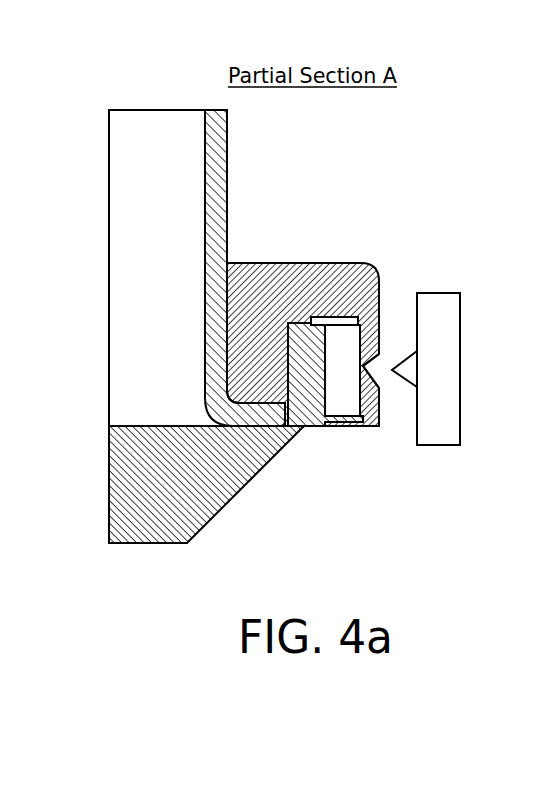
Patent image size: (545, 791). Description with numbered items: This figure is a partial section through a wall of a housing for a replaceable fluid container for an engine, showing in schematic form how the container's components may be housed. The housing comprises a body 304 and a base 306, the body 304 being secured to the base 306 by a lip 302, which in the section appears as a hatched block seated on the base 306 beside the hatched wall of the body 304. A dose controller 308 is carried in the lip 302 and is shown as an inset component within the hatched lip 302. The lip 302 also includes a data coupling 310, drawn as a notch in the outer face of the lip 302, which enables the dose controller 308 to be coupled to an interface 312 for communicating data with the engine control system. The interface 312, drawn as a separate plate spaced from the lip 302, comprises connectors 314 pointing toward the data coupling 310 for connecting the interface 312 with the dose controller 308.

The lip 302 is at (331, 262).
The body 304 is at (213, 174).
The base 306 is at (218, 485).
The dose controller 308 is at (340, 403).
The data coupling 310 is at (370, 366).
The interface 312 is at (445, 375).
The connectors 314 is at (410, 372).